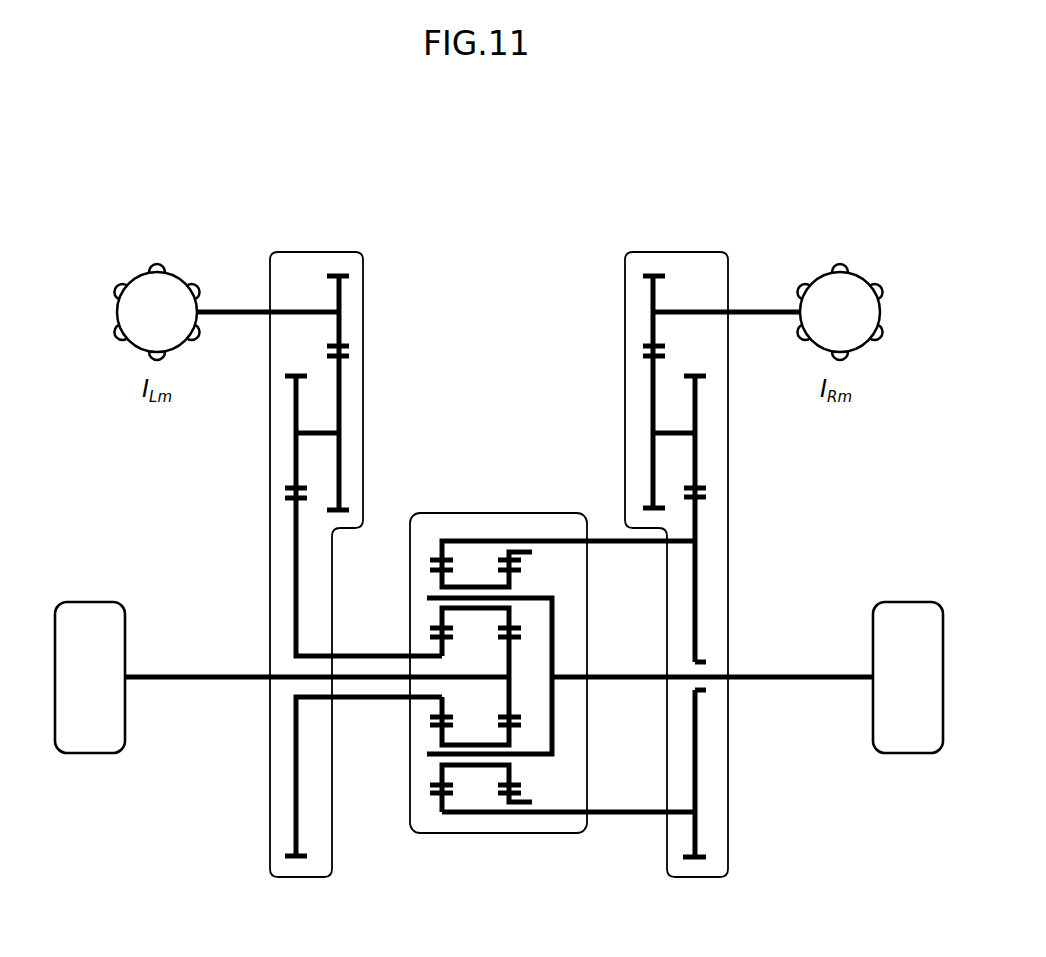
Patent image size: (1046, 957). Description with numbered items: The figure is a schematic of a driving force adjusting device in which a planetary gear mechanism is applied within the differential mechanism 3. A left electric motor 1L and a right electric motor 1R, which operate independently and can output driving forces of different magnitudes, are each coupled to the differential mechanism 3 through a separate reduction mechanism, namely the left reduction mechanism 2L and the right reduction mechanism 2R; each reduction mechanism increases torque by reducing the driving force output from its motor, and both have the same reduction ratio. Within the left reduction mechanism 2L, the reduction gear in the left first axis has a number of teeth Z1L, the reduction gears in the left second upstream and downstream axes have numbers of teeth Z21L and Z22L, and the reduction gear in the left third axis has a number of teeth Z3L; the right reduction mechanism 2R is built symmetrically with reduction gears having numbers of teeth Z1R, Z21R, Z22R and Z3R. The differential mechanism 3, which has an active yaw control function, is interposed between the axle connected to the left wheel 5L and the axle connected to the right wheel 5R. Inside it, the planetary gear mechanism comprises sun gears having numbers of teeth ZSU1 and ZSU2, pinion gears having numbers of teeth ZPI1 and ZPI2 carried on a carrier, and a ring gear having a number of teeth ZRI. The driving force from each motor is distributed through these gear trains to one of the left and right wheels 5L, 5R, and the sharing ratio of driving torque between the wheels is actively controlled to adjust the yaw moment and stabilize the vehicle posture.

The left electric motor 1L is at (178, 325).
The right electric motor 1R is at (861, 325).
The left reduction mechanism 2L is at (311, 250).
The right reduction mechanism 2R is at (677, 250).
The differential mechanism 3 is at (488, 513).
The left wheel 5L is at (68, 695).
The right wheel 5R is at (887, 695).
The number of teeth of reduction gear in left first axis Z1L is at (370, 315).
The number of teeth of reduction gear in left second upstream axis Z21L is at (360, 433).
The number of teeth of reduction gear in left second downstream axis Z22L is at (262, 437).
The number of teeth of reduction gear in left third axis Z3L is at (331, 577).
The number of teeth of sun gear ZSU1 is at (363, 776).
The number of teeth of pinion gear ZPI1 is at (438, 664).
The number of teeth of ring gear ZRI is at (558, 645).
The number of teeth of pinion gear ZPI2 is at (612, 599).
The number of teeth of sun gear ZSU2 is at (574, 773).
The number of teeth of reduction gear in right third axis Z3R is at (735, 579).
The number of teeth of reduction gear in right second downstream axis Z22R is at (735, 436).
The number of teeth of reduction gear in right second upstream axis Z21R is at (632, 432).
The number of teeth of reduction gear in right first axis Z1R is at (621, 314).